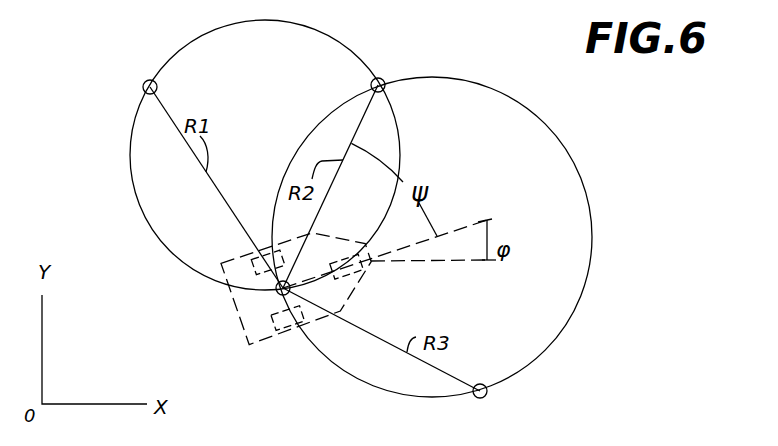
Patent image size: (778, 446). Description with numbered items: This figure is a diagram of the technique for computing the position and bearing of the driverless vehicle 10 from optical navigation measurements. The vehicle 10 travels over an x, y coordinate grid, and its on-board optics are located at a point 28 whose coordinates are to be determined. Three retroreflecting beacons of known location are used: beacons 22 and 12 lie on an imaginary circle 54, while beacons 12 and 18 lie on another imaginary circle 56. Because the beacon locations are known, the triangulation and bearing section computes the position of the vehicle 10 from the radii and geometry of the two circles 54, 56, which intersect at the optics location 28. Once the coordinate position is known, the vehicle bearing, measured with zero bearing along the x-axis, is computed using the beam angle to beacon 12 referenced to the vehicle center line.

The driverless vehicle 10 is at (243, 327).
The beacon 12 is at (382, 78).
The beacon 18 is at (487, 391).
The beacon 22 is at (150, 87).
The location of the on board vehicle optics 28 is at (276, 288).
The imaginary circle 54 is at (313, 26).
The imaginary circle 56 is at (570, 149).